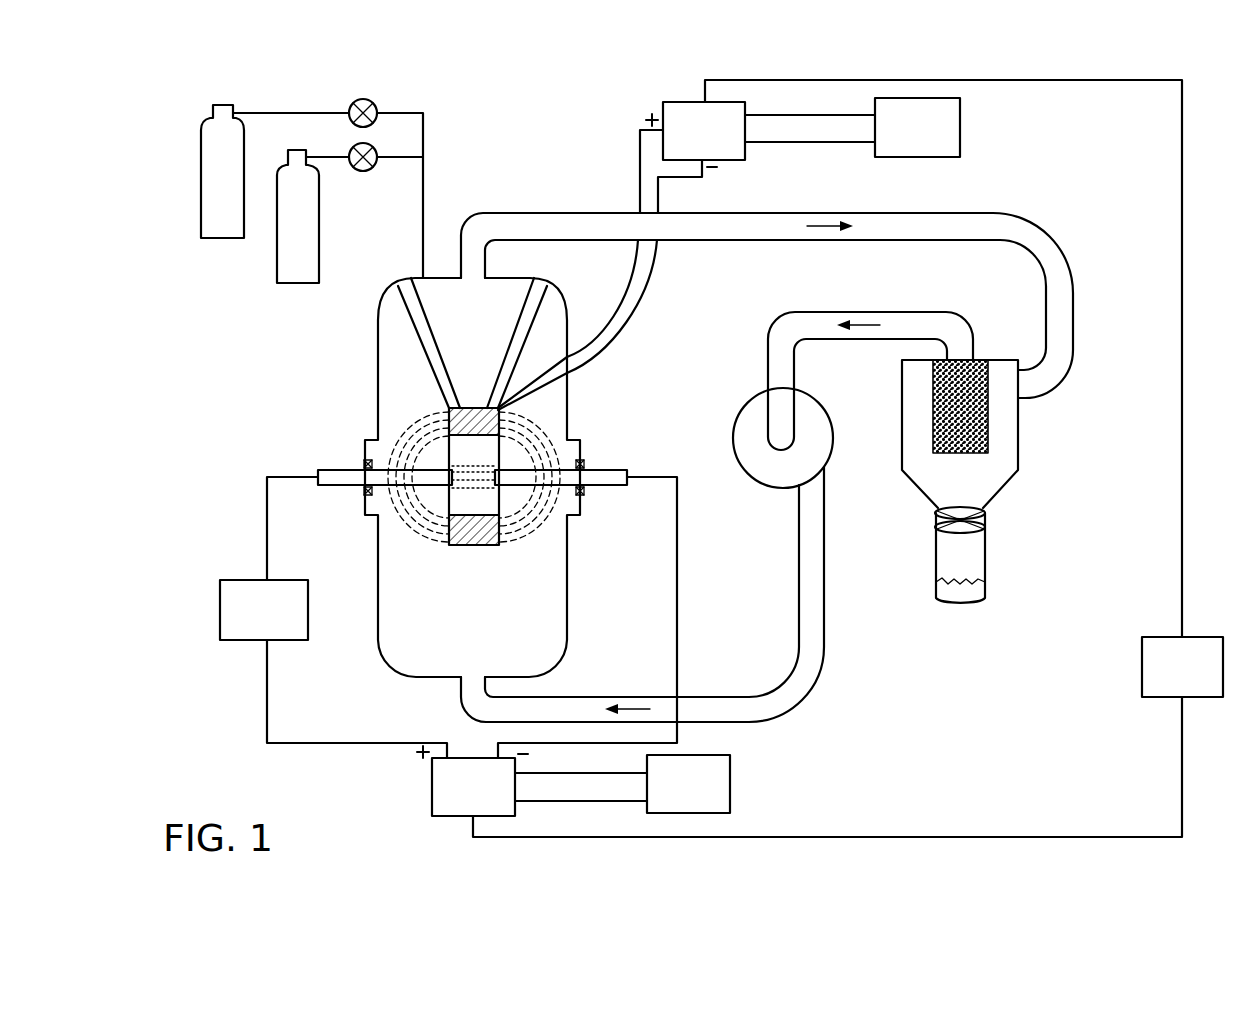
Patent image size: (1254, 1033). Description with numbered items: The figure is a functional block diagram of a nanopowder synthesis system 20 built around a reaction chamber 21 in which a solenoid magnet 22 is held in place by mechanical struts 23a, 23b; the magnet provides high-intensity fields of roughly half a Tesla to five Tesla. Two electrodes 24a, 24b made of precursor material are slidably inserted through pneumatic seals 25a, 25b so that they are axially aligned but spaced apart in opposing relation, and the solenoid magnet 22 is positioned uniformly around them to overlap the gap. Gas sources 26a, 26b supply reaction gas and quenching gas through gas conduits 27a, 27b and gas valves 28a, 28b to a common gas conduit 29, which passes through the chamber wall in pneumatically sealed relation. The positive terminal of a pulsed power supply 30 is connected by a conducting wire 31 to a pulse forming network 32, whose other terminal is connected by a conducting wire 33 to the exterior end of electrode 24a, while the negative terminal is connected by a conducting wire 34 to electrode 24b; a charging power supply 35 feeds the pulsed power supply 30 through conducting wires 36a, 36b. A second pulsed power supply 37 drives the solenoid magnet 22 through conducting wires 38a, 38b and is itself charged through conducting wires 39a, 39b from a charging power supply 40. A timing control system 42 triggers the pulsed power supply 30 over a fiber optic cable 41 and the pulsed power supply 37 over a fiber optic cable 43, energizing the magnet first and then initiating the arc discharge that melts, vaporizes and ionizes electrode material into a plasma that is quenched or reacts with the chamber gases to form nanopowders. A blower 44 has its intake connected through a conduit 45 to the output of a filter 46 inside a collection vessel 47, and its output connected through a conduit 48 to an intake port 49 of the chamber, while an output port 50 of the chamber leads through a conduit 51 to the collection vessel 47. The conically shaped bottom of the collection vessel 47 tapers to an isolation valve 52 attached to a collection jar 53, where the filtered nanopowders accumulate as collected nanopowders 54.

The nanopowder synthesis system 20 is at (779, 193).
The reaction chamber 21 is at (567, 300).
The solenoid magnet 22 is at (449, 410).
The mechanical strut 23a is at (429, 342).
The mechanical strut 23b is at (516, 343).
The electrode 24a is at (331, 467).
The electrode 24b is at (613, 467).
The pneumatic seal 25a is at (364, 492).
The pneumatic seal 25b is at (581, 494).
The gas source 26a is at (222, 235).
The gas source 26b is at (298, 270).
The gas conduit 27a is at (250, 113).
The gas conduit 27b is at (328, 157).
The gas valve 28a is at (373, 103).
The gas valve 28b is at (371, 168).
The gas conduit 29 is at (424, 196).
The pulsed power supply 30 is at (432, 790).
The conducting wire 31 is at (294, 743).
The pulse forming network 32 is at (220, 607).
The conducting wire 33 is at (267, 520).
The conducting wire 34 is at (677, 636).
The charging power supply 35 is at (731, 788).
The conducting wire 36a is at (577, 773).
The conducting wire 36b is at (550, 801).
The pulsed power supply 37 is at (672, 104).
The conducting wire 38a is at (640, 170).
The conducting wire 38b is at (658, 196).
The conducting wire 39a is at (796, 115).
The conducting wire 39b is at (796, 143).
The charging power supply 40 is at (961, 125).
The fiber optic cable 41 is at (905, 837).
The timing control system 42 is at (1198, 637).
The fiber optic cable 43 is at (1183, 215).
The blower 44 is at (736, 430).
The conduit 45 is at (893, 312).
The filter 46 is at (947, 438).
The collection vessel 47 is at (1003, 360).
The conduit 48 is at (825, 652).
The intake port 49 is at (478, 668).
The output port 50 is at (474, 276).
The conduit 51 is at (920, 213).
The isolation valve 52 is at (960, 509).
The collection jar 53 is at (975, 550).
The collected nanopowders 54 is at (960, 596).